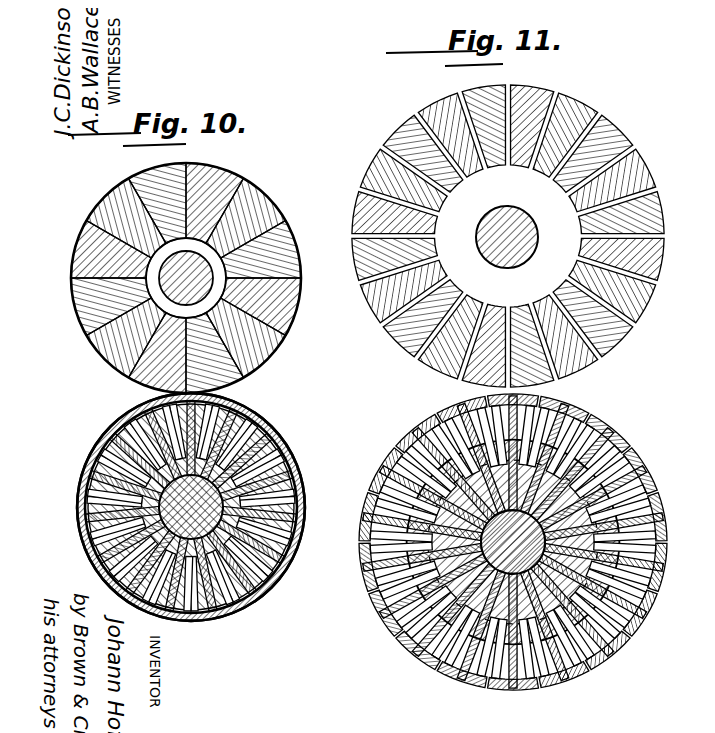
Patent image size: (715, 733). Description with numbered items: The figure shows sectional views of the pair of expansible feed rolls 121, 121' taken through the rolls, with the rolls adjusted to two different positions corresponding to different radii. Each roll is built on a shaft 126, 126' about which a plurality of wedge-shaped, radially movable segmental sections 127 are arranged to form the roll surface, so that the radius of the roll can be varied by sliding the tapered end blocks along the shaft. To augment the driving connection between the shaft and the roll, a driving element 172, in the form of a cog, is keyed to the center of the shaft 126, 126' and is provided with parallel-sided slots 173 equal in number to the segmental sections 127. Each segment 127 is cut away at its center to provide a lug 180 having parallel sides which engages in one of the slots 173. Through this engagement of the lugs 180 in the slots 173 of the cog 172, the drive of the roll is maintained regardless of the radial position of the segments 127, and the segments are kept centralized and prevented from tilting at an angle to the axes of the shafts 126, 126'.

In FIG. 10, the expansible feed roll 121 is at (163, 278).
In FIG. 10, the expansible feed roll 121' is at (169, 507).
In FIG. 10, the shaft 126 is at (186, 278).
In FIG. 11, the shaft 126 is at (507, 226).
In FIG. 10, the shaft 126' is at (191, 507).
In FIG. 11, the shaft 126' is at (513, 542).
In FIG. 10, the segmental sections 127 is at (247, 178).
In FIG. 11, the segmental sections 127 is at (560, 92).
In FIG. 10, the lugs 180 is at (250, 417).
In FIG. 11, the lugs 180 is at (593, 408).
In FIG. 10, the driving element 172 is at (273, 438).
In FIG. 11, the driving element 172 is at (607, 423).
In FIG. 10, the slots 173 is at (283, 458).
In FIG. 11, the slots 173 is at (630, 450).